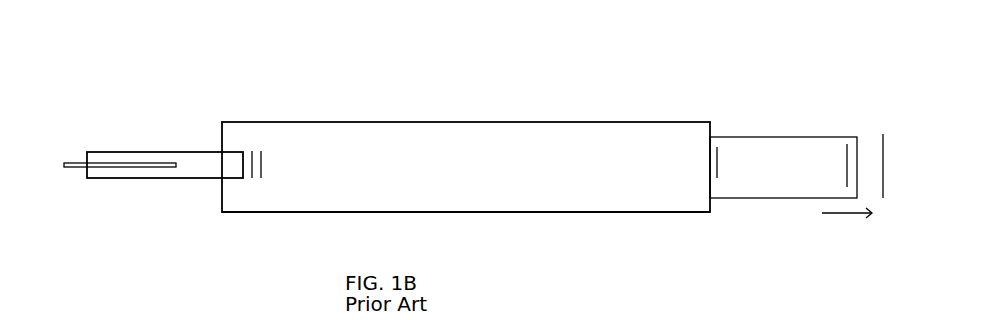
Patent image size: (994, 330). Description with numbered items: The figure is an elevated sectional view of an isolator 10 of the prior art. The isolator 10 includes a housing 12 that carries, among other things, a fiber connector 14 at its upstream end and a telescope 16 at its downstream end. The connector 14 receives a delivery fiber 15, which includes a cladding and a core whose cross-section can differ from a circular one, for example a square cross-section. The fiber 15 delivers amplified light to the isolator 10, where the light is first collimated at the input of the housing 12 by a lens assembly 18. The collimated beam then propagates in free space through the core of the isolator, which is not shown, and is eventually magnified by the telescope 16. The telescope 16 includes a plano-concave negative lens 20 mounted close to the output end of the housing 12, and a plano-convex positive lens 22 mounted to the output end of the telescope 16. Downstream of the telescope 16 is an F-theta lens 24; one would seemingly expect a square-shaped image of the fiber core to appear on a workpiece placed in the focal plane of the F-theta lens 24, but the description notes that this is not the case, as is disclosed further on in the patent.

The isolator 10 is at (537, 230).
The housing 12 is at (413, 212).
The fiber connector 14 is at (193, 152).
The delivery fiber 15 is at (70, 168).
The telescope 16 is at (803, 218).
The lens assembly 18 is at (262, 161).
The plano-concave negative lens 20 is at (718, 160).
The plano-convex positive lens 22 is at (845, 160).
The F-theta lens 24 is at (883, 162).